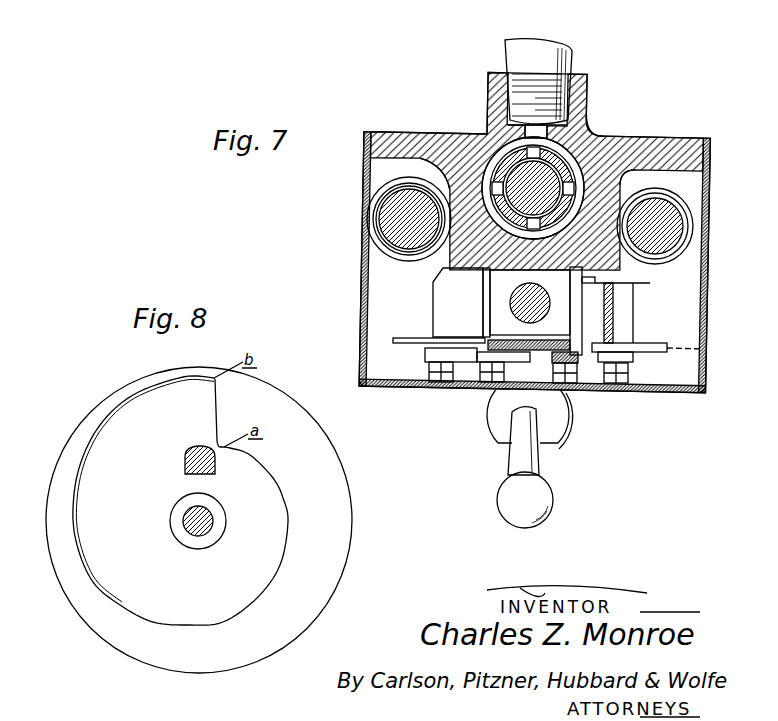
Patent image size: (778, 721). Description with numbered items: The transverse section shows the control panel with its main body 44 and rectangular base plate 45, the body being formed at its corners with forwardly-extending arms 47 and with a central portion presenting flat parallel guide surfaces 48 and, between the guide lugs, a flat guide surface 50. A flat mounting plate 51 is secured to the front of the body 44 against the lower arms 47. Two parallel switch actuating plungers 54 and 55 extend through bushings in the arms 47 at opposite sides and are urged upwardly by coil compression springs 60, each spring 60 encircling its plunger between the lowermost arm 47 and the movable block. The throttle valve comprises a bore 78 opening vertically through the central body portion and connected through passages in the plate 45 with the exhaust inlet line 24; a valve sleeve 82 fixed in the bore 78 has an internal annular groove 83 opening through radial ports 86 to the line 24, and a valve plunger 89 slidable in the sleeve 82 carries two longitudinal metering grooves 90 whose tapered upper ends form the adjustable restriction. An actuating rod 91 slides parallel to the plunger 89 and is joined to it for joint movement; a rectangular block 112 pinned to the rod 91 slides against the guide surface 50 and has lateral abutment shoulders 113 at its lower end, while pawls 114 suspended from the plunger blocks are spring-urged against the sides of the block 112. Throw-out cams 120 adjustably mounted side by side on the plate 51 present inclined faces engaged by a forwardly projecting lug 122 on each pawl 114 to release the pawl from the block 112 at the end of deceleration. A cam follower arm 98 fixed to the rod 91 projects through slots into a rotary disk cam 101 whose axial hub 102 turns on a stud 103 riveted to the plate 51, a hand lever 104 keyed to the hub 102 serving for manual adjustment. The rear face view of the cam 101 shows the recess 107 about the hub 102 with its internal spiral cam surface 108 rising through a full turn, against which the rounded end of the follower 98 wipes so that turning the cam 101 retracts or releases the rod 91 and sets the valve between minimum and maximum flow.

In FIG. 7, the exhaust inlet line 24 is at (577, 48).
In FIG. 7, the main body 44 is at (397, 128).
In FIG. 7, the rectangular base plate 45 is at (685, 148).
In FIG. 7, the forwardly-extending arms 47 is at (371, 312).
In FIG. 7, the guide surfaces 48 is at (447, 258).
In FIG. 7, the guide surface 50 is at (487, 270).
In FIG. 7, the mounting plate 51 is at (393, 343).
In FIG. 7, the switch actuating plunger 54 is at (380, 220).
In FIG. 7, the switch actuating plunger 55 is at (668, 230).
In FIG. 7, the coil compression spring 60 is at (385, 198).
In FIG. 7, the bore 78 is at (537, 250).
In FIG. 7, the valve sleeve 82 is at (517, 143).
In FIG. 7, the internal annular groove 83 is at (648, 142).
In FIG. 7, the radial ports 86 is at (487, 177).
In FIG. 7, the valve plunger 89 is at (586, 117).
In FIG. 7, the metering grooves 90 is at (507, 150).
In FIG. 7, the actuating rod 91 is at (497, 296).
In FIG. 7, the hand lever 104 is at (548, 490).
In FIG. 7, the block 112 is at (497, 324).
In FIG. 7, the abutment shoulders 113 is at (490, 311).
In FIG. 7, the pawls 114 is at (612, 305).
In FIG. 7, the throw-out cams 120 is at (465, 355).
In FIG. 7, the lug 122 is at (590, 362).
In FIG. 8, the cam follower arm 98 is at (185, 462).
In FIG. 8, the rotary disk cam 101 is at (345, 487).
In FIG. 8, the hub 102 is at (222, 515).
In FIG. 8, the stud 103 is at (212, 528).
In FIG. 8, the recess 107 is at (110, 570).
In FIG. 8, the spiral cam surface 108 is at (262, 476).